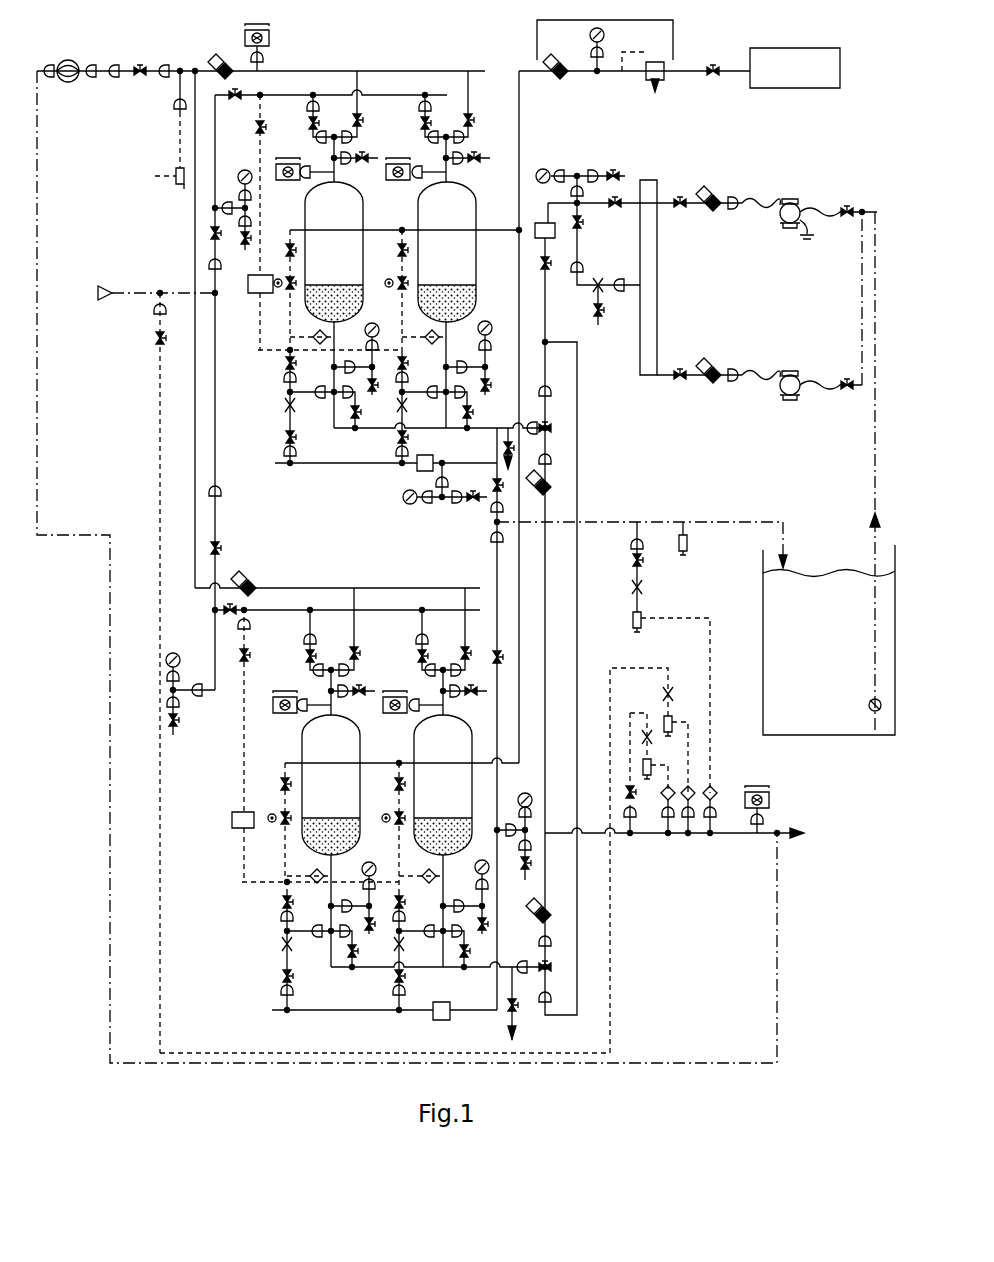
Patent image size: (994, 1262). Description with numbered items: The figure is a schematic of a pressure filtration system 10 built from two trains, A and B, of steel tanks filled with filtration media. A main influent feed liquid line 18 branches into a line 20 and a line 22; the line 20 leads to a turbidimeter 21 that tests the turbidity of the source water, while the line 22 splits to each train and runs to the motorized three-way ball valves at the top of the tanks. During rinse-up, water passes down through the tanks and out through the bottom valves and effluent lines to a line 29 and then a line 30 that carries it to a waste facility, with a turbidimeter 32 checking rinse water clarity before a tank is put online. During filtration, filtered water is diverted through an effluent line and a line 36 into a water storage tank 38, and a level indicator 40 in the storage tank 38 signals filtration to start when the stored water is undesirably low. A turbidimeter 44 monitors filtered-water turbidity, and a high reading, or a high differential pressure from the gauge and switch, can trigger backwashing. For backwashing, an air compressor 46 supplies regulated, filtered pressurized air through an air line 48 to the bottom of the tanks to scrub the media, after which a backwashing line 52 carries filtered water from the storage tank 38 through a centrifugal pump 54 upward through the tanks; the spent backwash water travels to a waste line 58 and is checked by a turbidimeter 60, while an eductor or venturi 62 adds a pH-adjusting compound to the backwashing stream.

The pressure filtration system 10 is at (77, 669).
The main influent feed liquid line 18 is at (112, 293).
The line 20 is at (160, 372).
The turbidimeter 21 is at (672, 722).
The line 22 is at (178, 293).
The line 29 is at (546, 618).
The line 30 is at (777, 830).
The turbidimeter 32 is at (650, 786).
The line 36 is at (600, 522).
The water storage tank 38 is at (763, 655).
The level indicator 40 is at (870, 705).
The turbidimeter 44 is at (641, 620).
The air compressor 46 is at (770, 68).
The air line 48 is at (520, 104).
The backwashing line 52 is at (875, 427).
The centrifugal pump 54 is at (792, 208).
The waste line 58 is at (37, 330).
The turbidimeter 60 is at (176, 176).
The eductor or venturi 62 is at (600, 285).